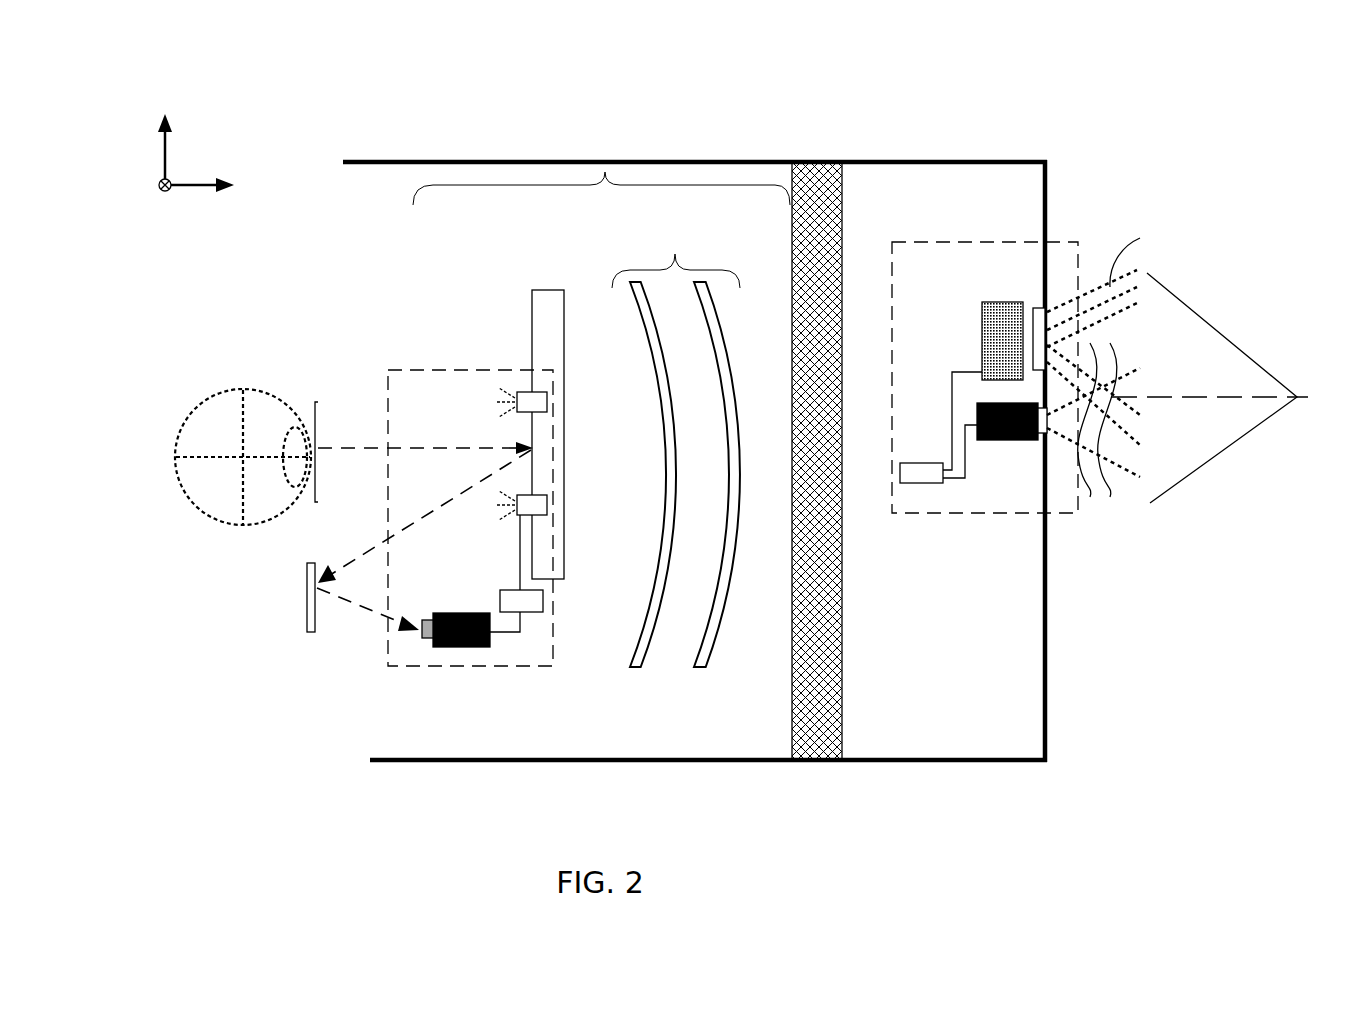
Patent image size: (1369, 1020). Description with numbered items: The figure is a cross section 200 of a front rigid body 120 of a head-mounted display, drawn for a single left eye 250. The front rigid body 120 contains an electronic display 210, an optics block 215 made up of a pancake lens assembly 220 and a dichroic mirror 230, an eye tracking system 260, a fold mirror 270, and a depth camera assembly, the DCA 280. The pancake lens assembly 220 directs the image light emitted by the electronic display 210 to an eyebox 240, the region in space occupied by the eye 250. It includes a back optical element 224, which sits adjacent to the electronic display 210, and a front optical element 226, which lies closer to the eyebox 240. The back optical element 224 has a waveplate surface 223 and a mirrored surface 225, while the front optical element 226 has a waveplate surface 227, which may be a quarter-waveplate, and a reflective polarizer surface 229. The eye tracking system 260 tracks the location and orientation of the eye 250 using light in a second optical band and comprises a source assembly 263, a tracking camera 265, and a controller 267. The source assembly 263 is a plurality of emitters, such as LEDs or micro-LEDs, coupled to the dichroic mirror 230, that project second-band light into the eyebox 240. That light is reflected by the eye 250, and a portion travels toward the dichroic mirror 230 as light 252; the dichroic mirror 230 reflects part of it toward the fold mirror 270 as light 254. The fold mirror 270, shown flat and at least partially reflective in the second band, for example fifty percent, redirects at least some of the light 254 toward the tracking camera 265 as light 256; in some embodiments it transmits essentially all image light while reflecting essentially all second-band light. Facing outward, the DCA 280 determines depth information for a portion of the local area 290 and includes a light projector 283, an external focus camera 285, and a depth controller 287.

The cross section 200 is at (148, 84).
The front rigid body 120 is at (1048, 712).
The electronic display 210 is at (817, 162).
The optics block 215 is at (607, 172).
The pancake lens assembly 220 is at (655, 246).
The waveplate surface 223 is at (717, 638).
The back optical element 224 is at (717, 332).
The mirrored surface 225 is at (698, 650).
The front optical element 226 is at (650, 333).
The waveplate surface 227 is at (668, 563).
The reflective polarizer surface 229 is at (660, 532).
The dichroic mirror 230 is at (546, 289).
The eyebox 240 is at (312, 400).
The eye 250 is at (213, 517).
The light 252 is at (371, 445).
The light 254 is at (424, 516).
The light 256 is at (368, 603).
The eye tracking system 260 is at (420, 667).
The source assembly 263 is at (547, 400).
The tracking camera 265 is at (437, 613).
The controller 267 is at (517, 588).
The fold mirror 270 is at (305, 608).
The DCA 280 is at (912, 242).
The light projector 283 is at (1003, 302).
The external focus camera 285 is at (1010, 440).
The depth controller 287 is at (938, 483).
The local area 290 is at (1225, 443).